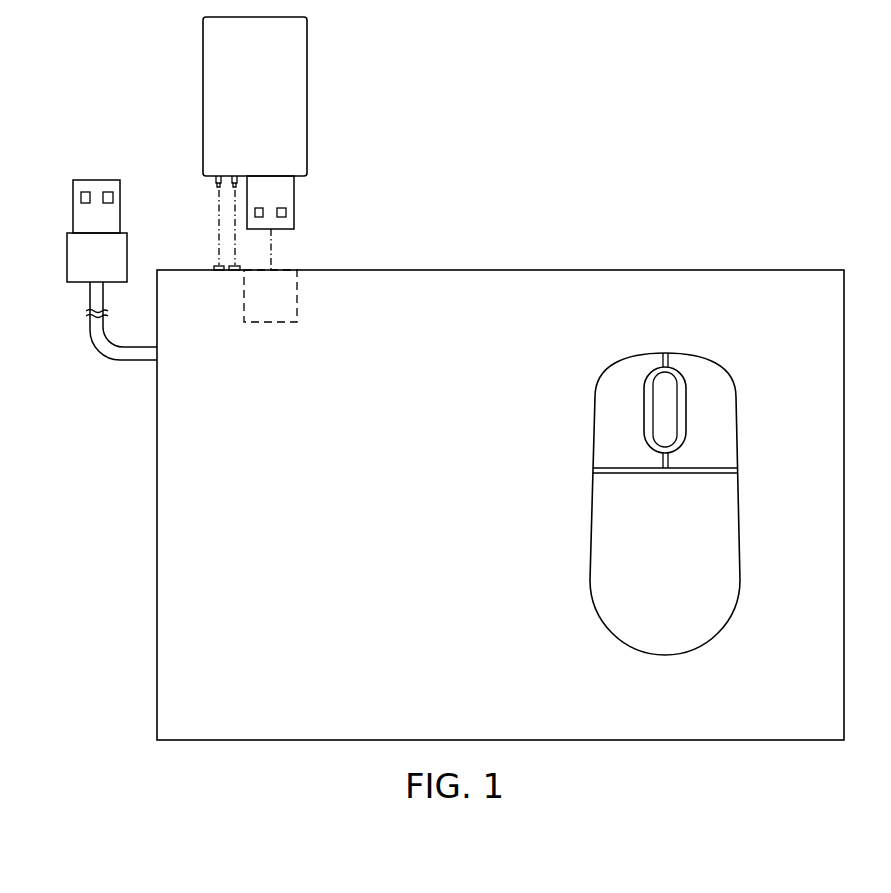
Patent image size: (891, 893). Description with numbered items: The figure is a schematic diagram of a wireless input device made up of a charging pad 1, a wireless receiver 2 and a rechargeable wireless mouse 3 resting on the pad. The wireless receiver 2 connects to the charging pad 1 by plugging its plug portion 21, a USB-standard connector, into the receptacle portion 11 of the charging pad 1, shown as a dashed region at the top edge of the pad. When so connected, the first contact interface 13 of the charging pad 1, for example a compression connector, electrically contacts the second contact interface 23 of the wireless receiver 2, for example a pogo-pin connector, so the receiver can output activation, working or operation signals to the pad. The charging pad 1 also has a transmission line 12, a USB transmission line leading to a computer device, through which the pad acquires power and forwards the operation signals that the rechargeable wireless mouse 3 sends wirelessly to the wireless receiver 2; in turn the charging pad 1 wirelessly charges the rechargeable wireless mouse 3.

The charging pad 1 is at (619, 276).
The receptacle portion 11 is at (271, 323).
The transmission line 12 is at (97, 351).
The first contact interface 13 is at (232, 265).
The wireless receiver 2 is at (307, 97).
The plug portion 21 is at (296, 196).
The second contact interface 23 is at (234, 184).
The rechargeable wireless mouse 3 is at (597, 522).